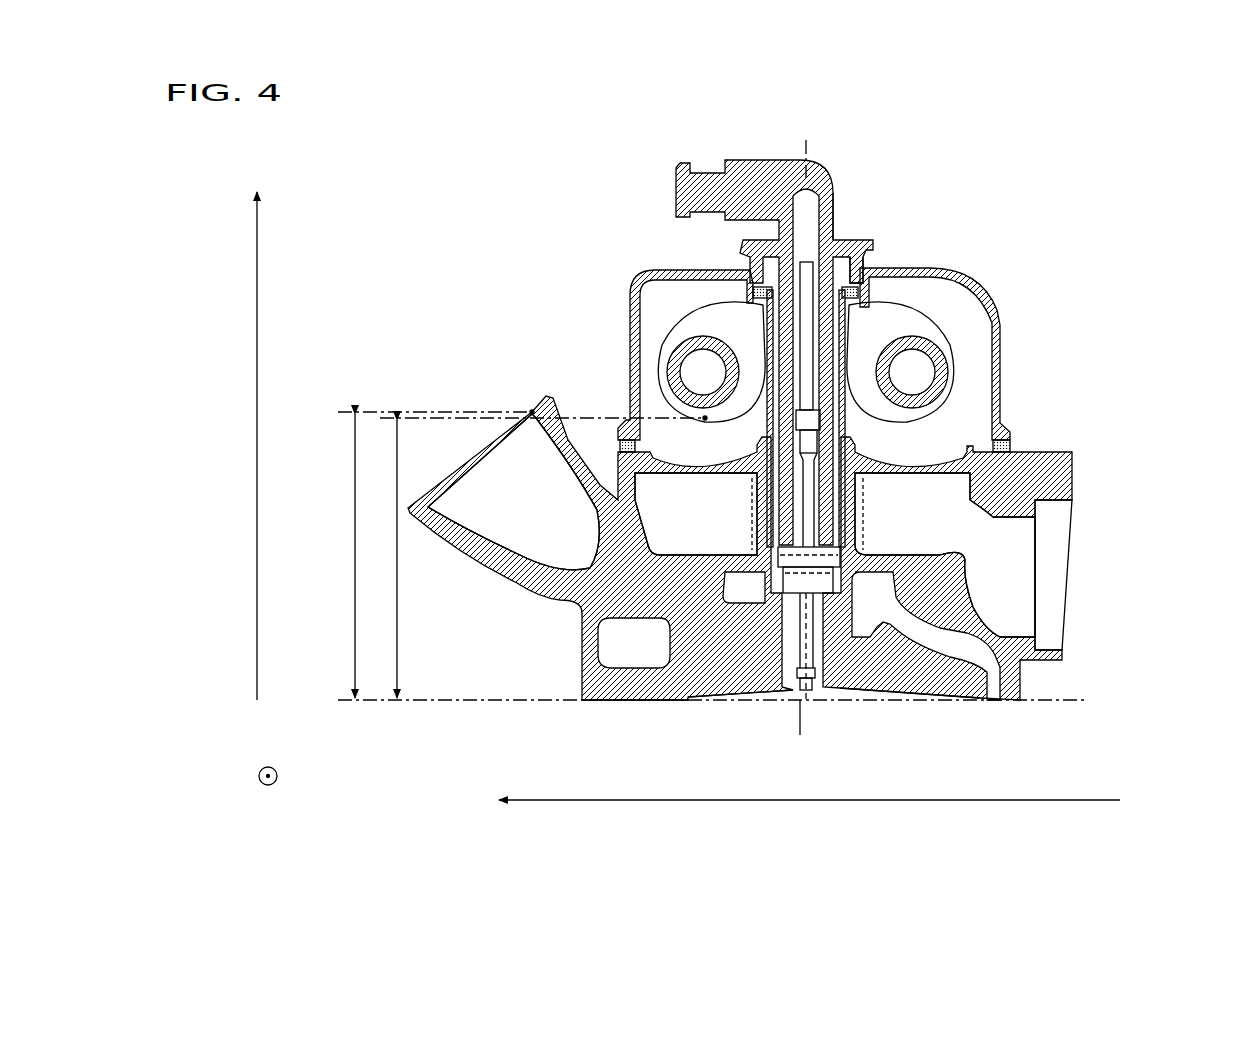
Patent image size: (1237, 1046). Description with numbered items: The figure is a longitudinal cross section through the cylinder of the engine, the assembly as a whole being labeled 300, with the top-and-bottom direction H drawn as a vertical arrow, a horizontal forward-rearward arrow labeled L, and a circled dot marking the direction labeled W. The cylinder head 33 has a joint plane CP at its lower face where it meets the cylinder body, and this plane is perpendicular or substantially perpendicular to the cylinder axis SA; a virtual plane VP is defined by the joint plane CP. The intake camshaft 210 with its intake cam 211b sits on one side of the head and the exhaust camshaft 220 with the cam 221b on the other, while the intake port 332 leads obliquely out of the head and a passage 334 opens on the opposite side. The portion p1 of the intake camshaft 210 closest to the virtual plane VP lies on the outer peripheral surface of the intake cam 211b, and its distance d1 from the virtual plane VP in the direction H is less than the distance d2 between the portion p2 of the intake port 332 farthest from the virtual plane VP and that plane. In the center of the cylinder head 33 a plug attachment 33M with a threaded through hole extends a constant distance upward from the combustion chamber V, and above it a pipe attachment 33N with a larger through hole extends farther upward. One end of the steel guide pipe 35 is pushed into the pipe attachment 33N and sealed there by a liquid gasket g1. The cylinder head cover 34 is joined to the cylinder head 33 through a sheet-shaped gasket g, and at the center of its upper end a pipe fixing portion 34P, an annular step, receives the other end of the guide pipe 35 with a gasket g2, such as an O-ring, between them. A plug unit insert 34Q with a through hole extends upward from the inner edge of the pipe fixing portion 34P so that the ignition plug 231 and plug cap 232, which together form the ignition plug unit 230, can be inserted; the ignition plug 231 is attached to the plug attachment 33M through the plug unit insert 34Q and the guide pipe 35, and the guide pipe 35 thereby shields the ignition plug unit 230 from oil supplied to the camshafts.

The valve device 300 is at (1044, 206).
The cylinder head 33 is at (1057, 478).
The intake port 332 is at (535, 540).
The outlet port 334 is at (1023, 610).
The pipe attachment 33N is at (745, 535).
The plug attachment 33M is at (737, 702).
The cylinder head cover 34 is at (932, 268).
The pipe fixing portion 34P is at (868, 292).
The plug unit insert 34Q is at (833, 222).
The guide pipe 35 is at (847, 398).
The intake camshaft 210 is at (672, 352).
The intake cam 211b is at (718, 322).
The exhaust camshaft 220 is at (948, 375).
The second pipe seat 221b is at (898, 327).
The ignition plug unit 230 is at (1155, 537).
The ignition plug 231 is at (807, 643).
The plug cap 232 is at (862, 552).
The gasket g is at (620, 445).
The liquid gasket g1 is at (852, 498).
The gasket g2 is at (753, 287).
The portion closest to the virtual plane p1 is at (706, 420).
The portion farthest from the virtual plane p2 is at (531, 409).
The distance d1 is at (382, 559).
The distance d2 is at (338, 556).
The top-and-bottom direction H is at (258, 292).
The longitudinal axis L is at (945, 800).
The width axis W is at (259, 779).
The virtual plane VP is at (467, 702).
The joint plane CP is at (618, 703).
The cylinder axis SA is at (802, 715).
The combustion chamber V is at (850, 703).